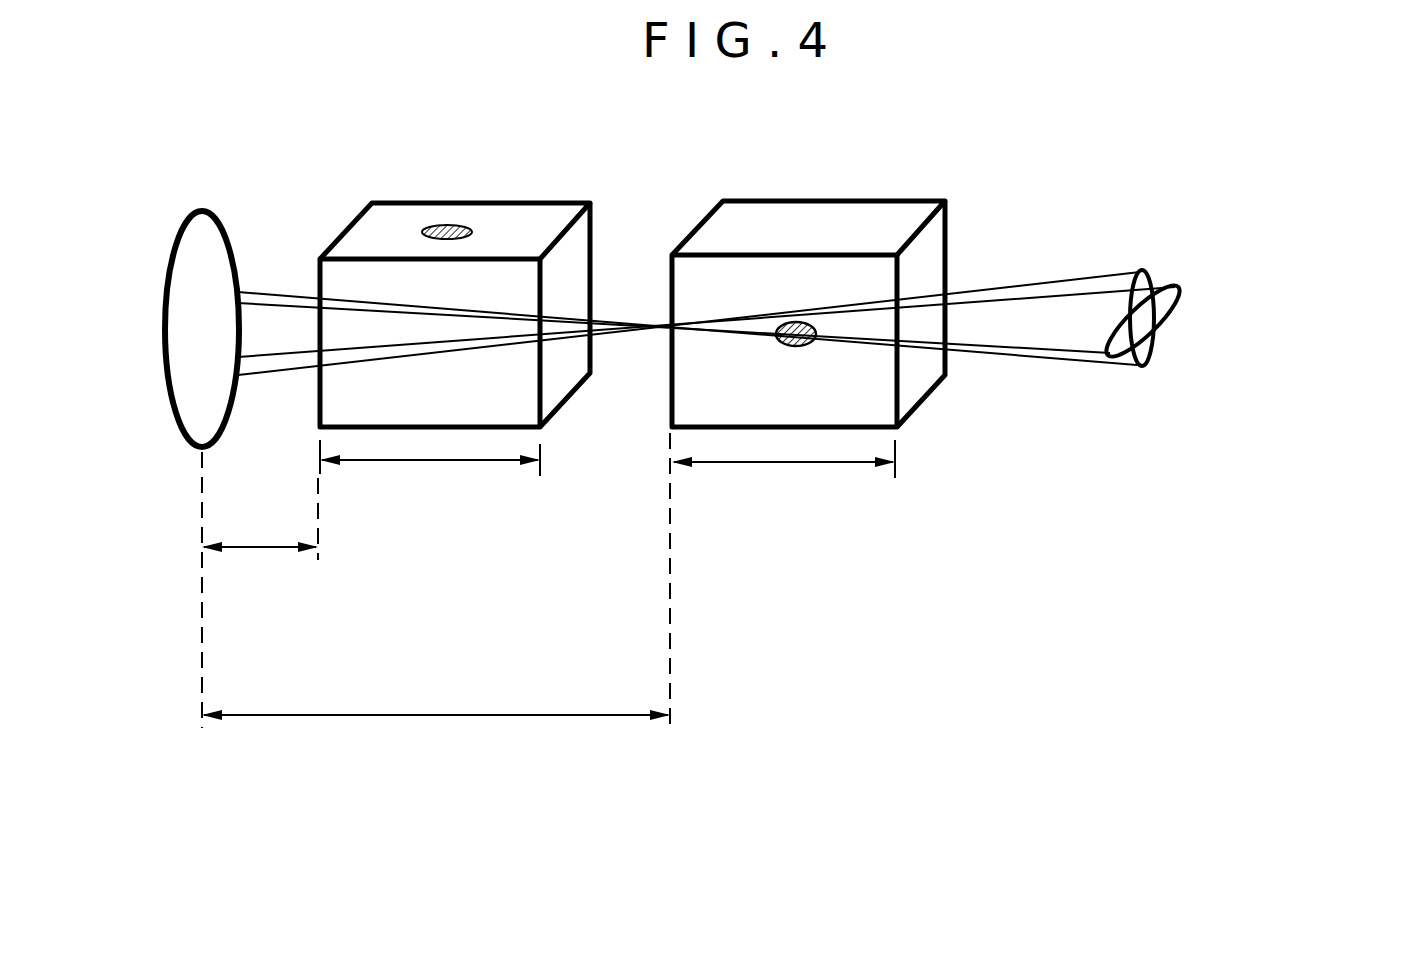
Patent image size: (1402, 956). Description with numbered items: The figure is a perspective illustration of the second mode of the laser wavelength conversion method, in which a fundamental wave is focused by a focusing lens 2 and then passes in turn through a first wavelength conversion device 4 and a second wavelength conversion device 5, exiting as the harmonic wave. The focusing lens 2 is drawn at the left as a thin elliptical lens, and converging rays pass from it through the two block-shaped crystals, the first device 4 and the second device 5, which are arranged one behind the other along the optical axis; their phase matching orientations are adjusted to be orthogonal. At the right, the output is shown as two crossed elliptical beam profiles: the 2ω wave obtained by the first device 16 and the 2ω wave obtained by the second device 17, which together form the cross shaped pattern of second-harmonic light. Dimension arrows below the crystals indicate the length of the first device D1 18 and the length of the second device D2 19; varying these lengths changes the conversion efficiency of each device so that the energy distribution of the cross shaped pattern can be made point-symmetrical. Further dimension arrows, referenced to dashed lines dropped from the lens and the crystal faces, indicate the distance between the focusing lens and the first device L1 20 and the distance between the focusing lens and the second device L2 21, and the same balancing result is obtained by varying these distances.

The focusing lens 2 is at (192, 257).
The first wavelength conversion device 4 is at (405, 213).
The second wavelength conversion device 5 is at (877, 213).
The 2ω wave obtained by first device 16 is at (1137, 362).
The 2ω wave obtained by second device 17 is at (1138, 328).
The length of first device D1 18 is at (377, 463).
The length of second device D2 19 is at (740, 464).
The distance between focusing lens and first device L1 20 is at (253, 550).
The distance between focusing lens and second device L2 21 is at (260, 718).